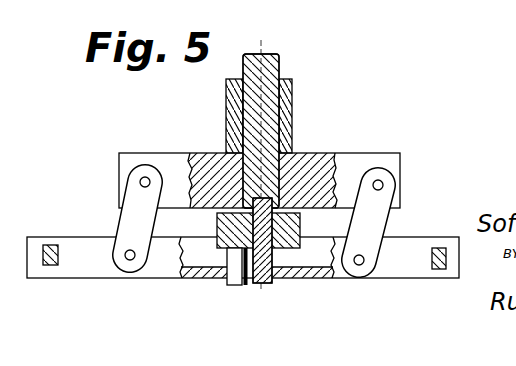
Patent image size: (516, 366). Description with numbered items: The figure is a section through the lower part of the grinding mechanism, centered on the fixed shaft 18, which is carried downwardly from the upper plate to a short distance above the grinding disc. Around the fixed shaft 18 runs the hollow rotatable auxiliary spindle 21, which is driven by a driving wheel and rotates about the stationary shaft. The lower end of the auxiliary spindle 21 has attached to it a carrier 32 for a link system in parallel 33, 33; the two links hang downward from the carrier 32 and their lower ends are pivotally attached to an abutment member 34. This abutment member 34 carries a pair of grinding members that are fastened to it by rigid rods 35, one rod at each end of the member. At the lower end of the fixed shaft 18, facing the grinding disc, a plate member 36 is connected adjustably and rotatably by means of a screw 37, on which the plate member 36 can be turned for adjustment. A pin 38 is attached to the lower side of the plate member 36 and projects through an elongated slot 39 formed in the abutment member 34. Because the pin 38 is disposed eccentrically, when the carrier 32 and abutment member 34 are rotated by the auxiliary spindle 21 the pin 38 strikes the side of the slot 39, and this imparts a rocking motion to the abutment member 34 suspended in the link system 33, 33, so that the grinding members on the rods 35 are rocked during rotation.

The fixed shaft 18 is at (268, 128).
The hollow rotatable auxiliary spindle 21 is at (226, 129).
The carrier 32 is at (390, 163).
The link system in parallel 33 is at (130, 219).
The abutment member 34 is at (102, 263).
The rigid rods 35 is at (47, 266).
The plate member 36 is at (300, 250).
The screw 37 is at (257, 285).
The pin 38 is at (233, 283).
The elongated slot 39 is at (278, 278).